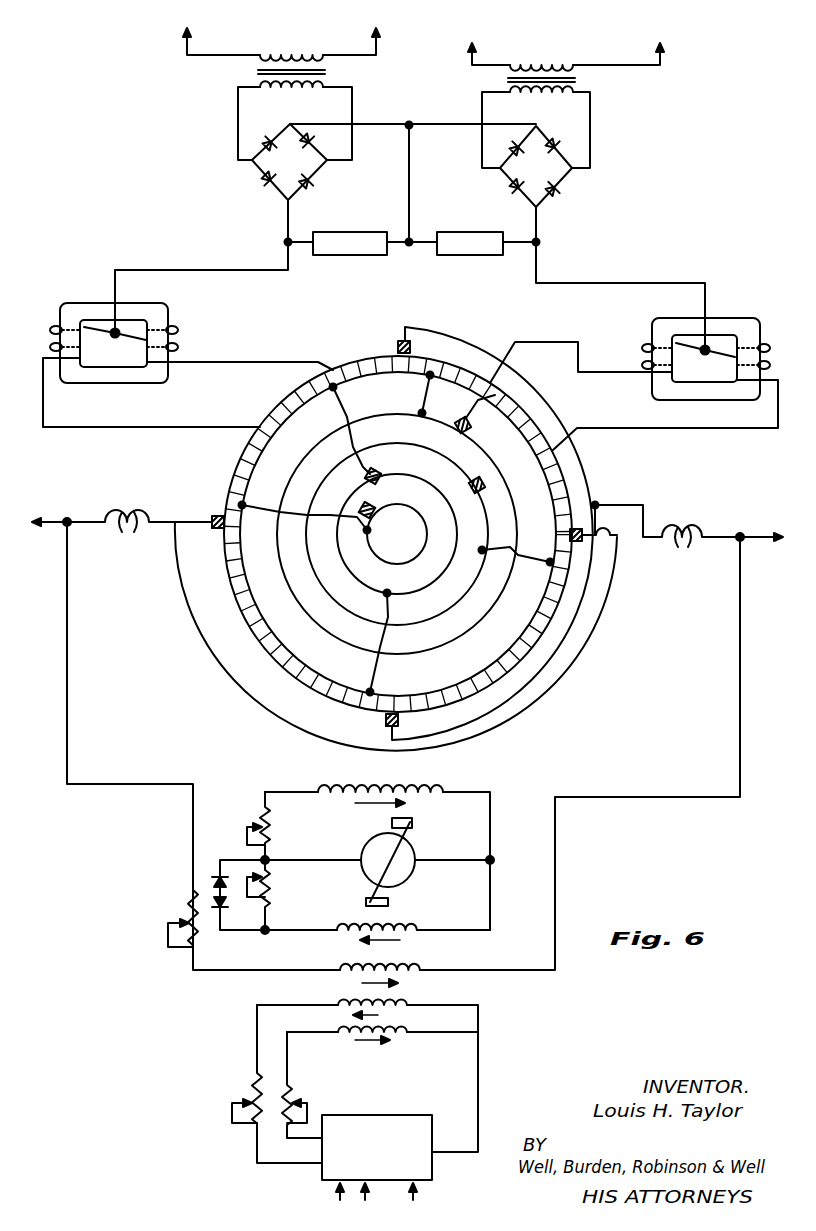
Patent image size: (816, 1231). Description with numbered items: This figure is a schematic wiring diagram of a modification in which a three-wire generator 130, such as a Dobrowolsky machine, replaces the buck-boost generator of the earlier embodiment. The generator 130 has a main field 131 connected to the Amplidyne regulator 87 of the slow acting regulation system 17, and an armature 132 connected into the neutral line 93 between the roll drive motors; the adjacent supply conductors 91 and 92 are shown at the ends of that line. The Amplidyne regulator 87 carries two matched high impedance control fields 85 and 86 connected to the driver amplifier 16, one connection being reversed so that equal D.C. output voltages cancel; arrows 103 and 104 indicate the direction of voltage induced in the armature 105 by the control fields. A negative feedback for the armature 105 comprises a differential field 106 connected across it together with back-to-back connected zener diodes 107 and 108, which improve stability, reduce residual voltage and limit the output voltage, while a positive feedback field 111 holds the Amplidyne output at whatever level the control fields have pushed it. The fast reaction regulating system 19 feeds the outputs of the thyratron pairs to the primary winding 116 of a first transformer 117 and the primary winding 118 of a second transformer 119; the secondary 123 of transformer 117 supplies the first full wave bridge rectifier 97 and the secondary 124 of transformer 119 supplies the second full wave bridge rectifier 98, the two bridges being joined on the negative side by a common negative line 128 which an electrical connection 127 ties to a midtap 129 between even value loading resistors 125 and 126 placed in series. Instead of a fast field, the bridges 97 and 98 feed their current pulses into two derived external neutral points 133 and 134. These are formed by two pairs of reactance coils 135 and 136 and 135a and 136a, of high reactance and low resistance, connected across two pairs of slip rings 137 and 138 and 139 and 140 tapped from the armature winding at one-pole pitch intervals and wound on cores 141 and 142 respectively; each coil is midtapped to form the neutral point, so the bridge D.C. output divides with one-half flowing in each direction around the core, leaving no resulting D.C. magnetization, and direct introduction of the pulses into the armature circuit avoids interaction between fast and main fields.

The primary winding 116 is at (305, 55).
The first transformer 117 is at (336, 72).
The primary winding 118 is at (560, 64).
The second transformer 119 is at (584, 81).
The secondary 123 is at (296, 90).
The secondary 124 is at (540, 92).
The common negative line 128 is at (370, 125).
The fast reaction regulating system 19 is at (448, 116).
The electrical connection 127 is at (410, 172).
The first full wave bridge rectifier 97 is at (317, 181).
The second full wave bridge rectifier 98 is at (562, 184).
The loading resistor 125 is at (341, 232).
The loading resistor 126 is at (486, 232).
The midtap 129 is at (409, 246).
The reactance coil 135 is at (50, 326).
The derived external neutral point 133 is at (112, 330).
The core 141 is at (165, 310).
The reactance coil 136 is at (178, 331).
The core 142 is at (656, 322).
The derived external neutral point 134 is at (708, 345).
The reactance coil 136a is at (768, 345).
The reactance coil 135a is at (642, 349).
The slip ring 137 is at (371, 509).
The slip ring 138 is at (377, 478).
The slip ring 139 is at (472, 480).
The slip ring 140 is at (470, 426).
The armature 132 is at (572, 494).
The supply conductor 91 is at (34, 518).
The neutral line 93 is at (752, 534).
The supply terminal 92 is at (780, 542).
The 3-wire generator 130 is at (582, 670).
The main field 131 is at (436, 792).
The zener diode 107 is at (212, 878).
The armature 105 is at (365, 845).
The Amplidyne regulator 87 is at (422, 855).
The slow acting regulation system 17 is at (500, 832).
The differential field 106 is at (410, 930).
The zener diode 108 is at (206, 918).
The field 111 is at (410, 970).
The control field 85 is at (400, 1005).
The arrow 104 is at (358, 1016).
The control field 86 is at (400, 1032).
The arrow 103 is at (360, 1040).
The driver amplifier 16 is at (404, 1118).